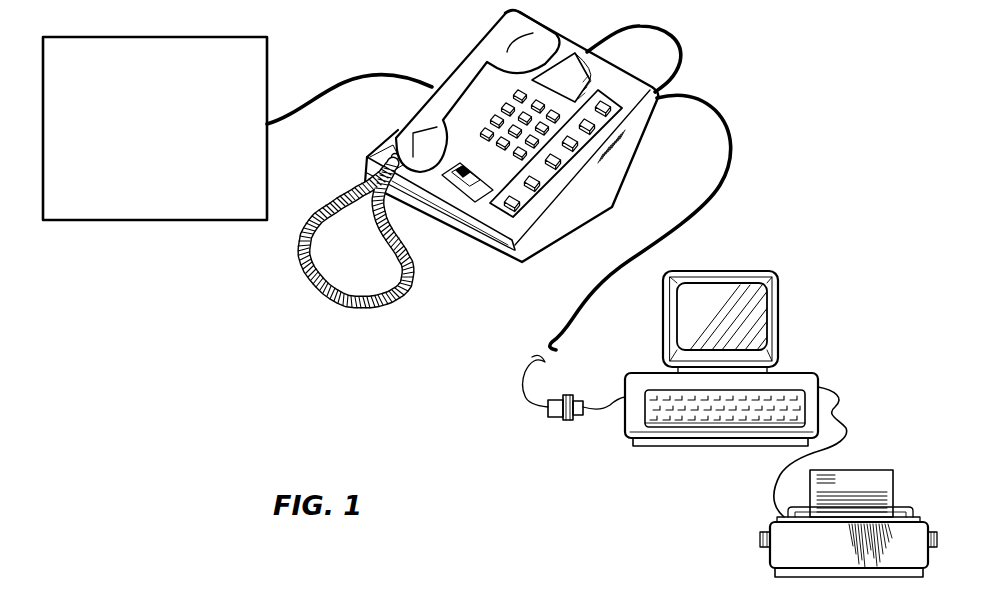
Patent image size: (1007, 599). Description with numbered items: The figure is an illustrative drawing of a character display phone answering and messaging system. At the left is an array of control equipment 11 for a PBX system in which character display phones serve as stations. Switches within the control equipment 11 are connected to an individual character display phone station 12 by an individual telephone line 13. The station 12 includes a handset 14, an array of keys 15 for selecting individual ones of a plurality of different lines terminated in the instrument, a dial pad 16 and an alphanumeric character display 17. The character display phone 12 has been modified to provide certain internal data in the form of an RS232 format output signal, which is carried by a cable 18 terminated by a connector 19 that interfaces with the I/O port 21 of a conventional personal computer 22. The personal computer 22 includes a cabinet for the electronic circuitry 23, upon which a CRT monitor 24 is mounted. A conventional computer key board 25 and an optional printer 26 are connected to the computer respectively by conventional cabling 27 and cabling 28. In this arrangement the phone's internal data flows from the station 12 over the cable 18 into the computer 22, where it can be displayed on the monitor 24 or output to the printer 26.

The control equipment 11 is at (267, 72).
The character display phone station 12 is at (478, 155).
The telephone line 13 is at (356, 72).
The handset 14 is at (452, 68).
The array of keys 15 is at (551, 195).
The dial pad 16 is at (505, 102).
The alphanumeric character display 17 is at (570, 80).
The cable 18 is at (730, 146).
The connector 19 is at (553, 418).
The I/O port 21 is at (583, 418).
The personal computer 22 is at (753, 354).
The cabinet for the electronic circuitry 23 is at (818, 382).
The CRT monitor 24 is at (724, 292).
The computer key board 25 is at (698, 415).
The printer 26 is at (782, 553).
The cabling 27 is at (853, 430).
The cabling 28 is at (833, 460).